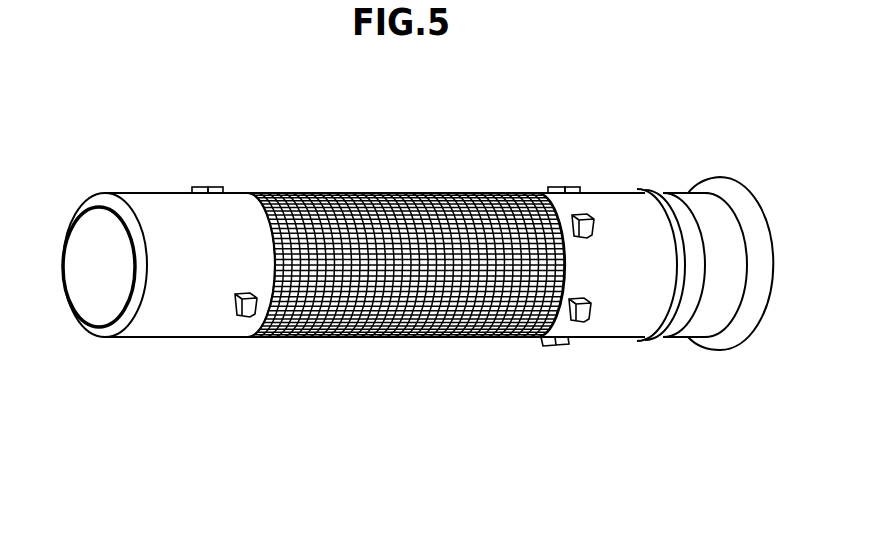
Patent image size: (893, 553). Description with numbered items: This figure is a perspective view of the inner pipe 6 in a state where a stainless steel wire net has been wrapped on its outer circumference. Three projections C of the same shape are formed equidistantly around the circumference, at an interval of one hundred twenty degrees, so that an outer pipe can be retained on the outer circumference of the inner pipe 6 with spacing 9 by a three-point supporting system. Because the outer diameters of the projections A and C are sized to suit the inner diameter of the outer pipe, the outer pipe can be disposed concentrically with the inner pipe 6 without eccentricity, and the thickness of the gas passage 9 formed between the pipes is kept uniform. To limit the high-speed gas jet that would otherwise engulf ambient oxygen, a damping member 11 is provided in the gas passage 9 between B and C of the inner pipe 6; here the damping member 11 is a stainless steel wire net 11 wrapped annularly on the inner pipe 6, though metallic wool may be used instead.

The inner pipe 6 is at (160, 198).
The damping member 11 is at (433, 192).
The gas passage 9 is at (605, 288).
The projection A is at (673, 200).
The projection B is at (593, 213).
The projection C is at (200, 186).